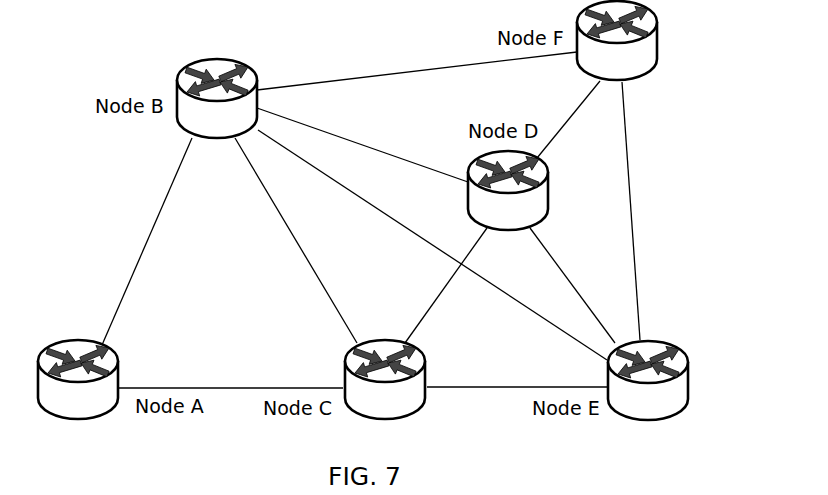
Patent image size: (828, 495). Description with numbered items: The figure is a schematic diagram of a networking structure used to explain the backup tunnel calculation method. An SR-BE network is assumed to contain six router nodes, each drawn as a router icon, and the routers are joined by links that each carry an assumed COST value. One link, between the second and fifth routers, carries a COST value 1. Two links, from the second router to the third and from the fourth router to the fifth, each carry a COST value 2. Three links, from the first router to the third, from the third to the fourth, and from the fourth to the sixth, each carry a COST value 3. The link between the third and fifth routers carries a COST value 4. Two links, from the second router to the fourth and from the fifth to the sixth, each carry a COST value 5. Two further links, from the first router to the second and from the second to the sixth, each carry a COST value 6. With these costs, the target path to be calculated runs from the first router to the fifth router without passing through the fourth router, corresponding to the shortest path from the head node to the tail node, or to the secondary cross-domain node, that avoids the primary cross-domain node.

The COST value between node B and node E 1 is at (432, 245).
The COST value between node B and node C, and between node D and node E 2 is at (425, 240).
The COST value between node A and node C, node C and node D, and node D and node F 3 is at (359, 234).
The COST value between node C and node E 4 is at (517, 372).
The COST value between node B and node D, and between node E and node F 5 is at (455, 211).
The COST value between node A and node B, and between node B and node F 6 is at (339, 190).